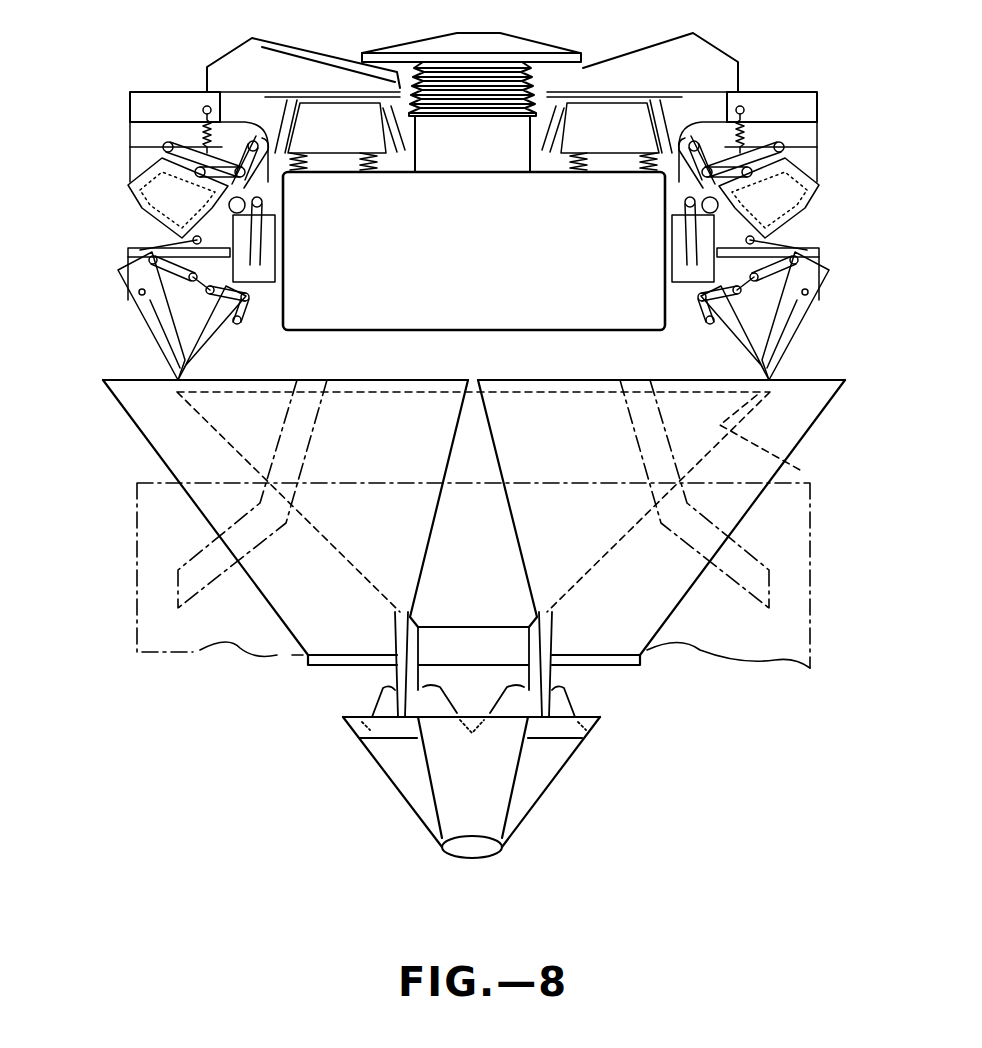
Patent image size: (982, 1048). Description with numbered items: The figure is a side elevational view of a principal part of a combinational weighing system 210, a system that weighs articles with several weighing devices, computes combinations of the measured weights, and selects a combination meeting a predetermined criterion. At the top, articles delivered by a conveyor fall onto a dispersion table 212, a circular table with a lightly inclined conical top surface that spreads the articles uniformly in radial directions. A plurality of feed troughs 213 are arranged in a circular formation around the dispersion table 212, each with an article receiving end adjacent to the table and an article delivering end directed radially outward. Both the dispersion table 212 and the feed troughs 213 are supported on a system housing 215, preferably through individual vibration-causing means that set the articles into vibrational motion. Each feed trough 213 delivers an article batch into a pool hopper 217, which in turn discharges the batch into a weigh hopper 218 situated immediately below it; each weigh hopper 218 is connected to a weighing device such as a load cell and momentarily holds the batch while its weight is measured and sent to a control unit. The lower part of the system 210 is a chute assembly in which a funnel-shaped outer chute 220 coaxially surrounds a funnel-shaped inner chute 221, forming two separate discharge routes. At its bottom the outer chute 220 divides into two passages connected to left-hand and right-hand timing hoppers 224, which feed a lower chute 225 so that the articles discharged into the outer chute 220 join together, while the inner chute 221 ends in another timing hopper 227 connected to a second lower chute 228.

The combinational weighing system 210 is at (236, 662).
The dispersion table 212 is at (487, 42).
The feed trough 213 is at (218, 68).
The system housing 215 is at (498, 305).
The pool hopper 217 is at (135, 103).
The weigh hopper 218 is at (123, 267).
The outer chute 220 is at (793, 417).
The inner chute 221 is at (797, 465).
The timing hopper 224 is at (330, 678).
The lower chute 225 is at (540, 772).
The timing hopper 227 is at (472, 667).
The second lower chute 228 is at (478, 820).